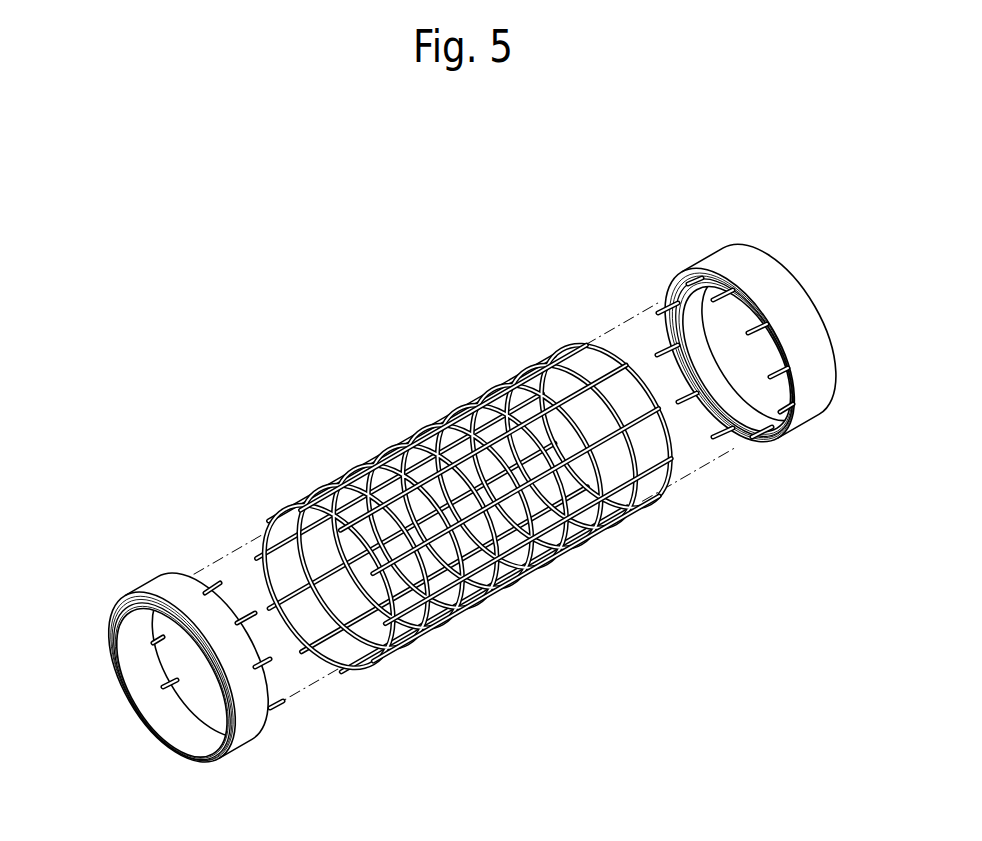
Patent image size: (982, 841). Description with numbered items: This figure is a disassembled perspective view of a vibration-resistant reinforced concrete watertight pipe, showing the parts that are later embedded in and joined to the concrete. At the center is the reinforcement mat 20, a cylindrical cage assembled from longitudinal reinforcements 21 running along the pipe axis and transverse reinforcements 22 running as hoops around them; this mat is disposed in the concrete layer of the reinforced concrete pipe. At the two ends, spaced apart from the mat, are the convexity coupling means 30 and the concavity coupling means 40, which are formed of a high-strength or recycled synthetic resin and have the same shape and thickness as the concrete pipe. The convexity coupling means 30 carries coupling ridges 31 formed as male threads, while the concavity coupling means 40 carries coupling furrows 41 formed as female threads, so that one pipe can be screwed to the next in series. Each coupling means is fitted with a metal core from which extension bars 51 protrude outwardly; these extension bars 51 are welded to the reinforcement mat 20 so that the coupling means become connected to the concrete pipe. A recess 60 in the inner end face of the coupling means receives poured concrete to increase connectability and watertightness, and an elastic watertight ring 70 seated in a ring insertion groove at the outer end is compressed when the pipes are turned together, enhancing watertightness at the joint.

The reinforcement mat 20 is at (488, 543).
The longitudinal reinforcements 21 is at (485, 546).
The transverse reinforcements 22 is at (623, 514).
The convexity coupling means 30 is at (196, 656).
The coupling ridges 31 is at (233, 717).
The concavity coupling means 40 is at (714, 327).
The coupling furrows 41 is at (718, 349).
The extension bars 51 is at (656, 302).
The recess 60 is at (668, 330).
The watertight ring 70 is at (193, 753).